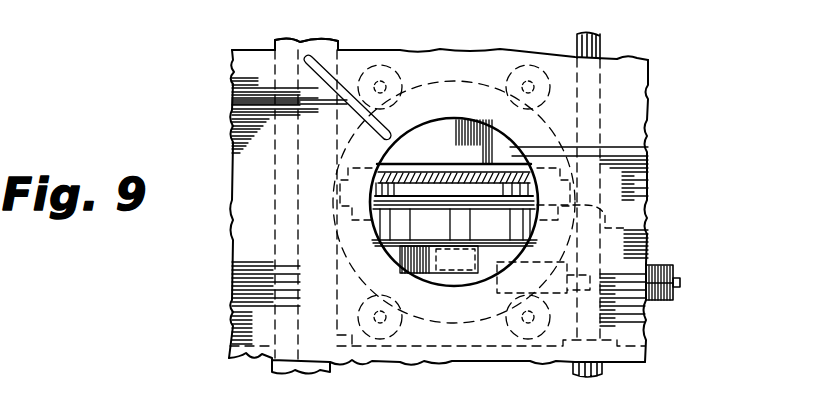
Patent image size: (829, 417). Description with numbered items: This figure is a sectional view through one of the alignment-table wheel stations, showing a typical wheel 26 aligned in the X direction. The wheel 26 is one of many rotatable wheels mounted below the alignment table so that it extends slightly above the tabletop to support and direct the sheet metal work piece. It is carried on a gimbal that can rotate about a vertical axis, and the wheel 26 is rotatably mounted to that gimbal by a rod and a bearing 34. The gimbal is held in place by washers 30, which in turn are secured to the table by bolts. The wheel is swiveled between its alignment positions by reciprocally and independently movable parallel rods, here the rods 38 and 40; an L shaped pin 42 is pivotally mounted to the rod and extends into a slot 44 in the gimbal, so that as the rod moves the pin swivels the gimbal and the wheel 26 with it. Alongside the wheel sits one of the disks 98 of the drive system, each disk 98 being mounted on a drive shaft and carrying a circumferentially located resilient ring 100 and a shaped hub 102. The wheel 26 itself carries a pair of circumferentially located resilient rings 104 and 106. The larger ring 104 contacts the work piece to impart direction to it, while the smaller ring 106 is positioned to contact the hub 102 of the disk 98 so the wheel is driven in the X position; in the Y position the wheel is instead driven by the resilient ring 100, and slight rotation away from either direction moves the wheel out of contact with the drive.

The wheel 26 is at (403, 265).
The washer 30 is at (393, 67).
The bearing 34 is at (443, 273).
The parallel rod 38 is at (272, 362).
The parallel rod 40 is at (320, 42).
The L shaped pin 42 is at (362, 54).
The slot 44 is at (454, 202).
The disk 98 is at (673, 271).
The resilient ring 100 is at (681, 283).
The hub 102 is at (648, 222).
The resilient ring 104 is at (423, 195).
The resilient ring 106 is at (478, 208).